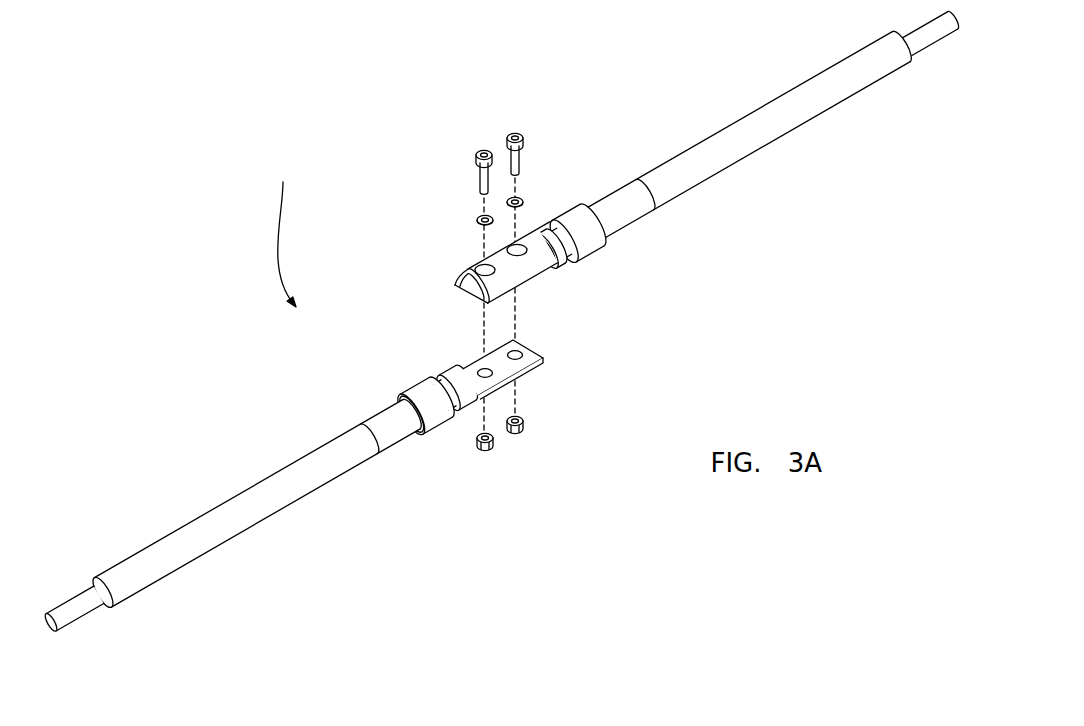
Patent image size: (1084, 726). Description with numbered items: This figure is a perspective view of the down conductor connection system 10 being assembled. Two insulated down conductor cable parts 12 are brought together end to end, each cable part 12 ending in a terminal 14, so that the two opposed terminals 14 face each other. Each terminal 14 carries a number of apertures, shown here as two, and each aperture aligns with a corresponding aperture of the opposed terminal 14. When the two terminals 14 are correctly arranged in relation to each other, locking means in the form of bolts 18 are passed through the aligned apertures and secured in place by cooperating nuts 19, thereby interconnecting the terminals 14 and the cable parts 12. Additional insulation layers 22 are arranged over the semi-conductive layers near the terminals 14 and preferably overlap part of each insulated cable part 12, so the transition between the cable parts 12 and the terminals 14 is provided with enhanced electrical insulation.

The shaft assembly 10 is at (282, 228).
The insulated down conductor cable part 12 is at (663, 163).
The terminal 14 is at (465, 270).
The bolt 18 is at (510, 133).
The nut 19 is at (518, 432).
The insulation layer 22 is at (573, 207).